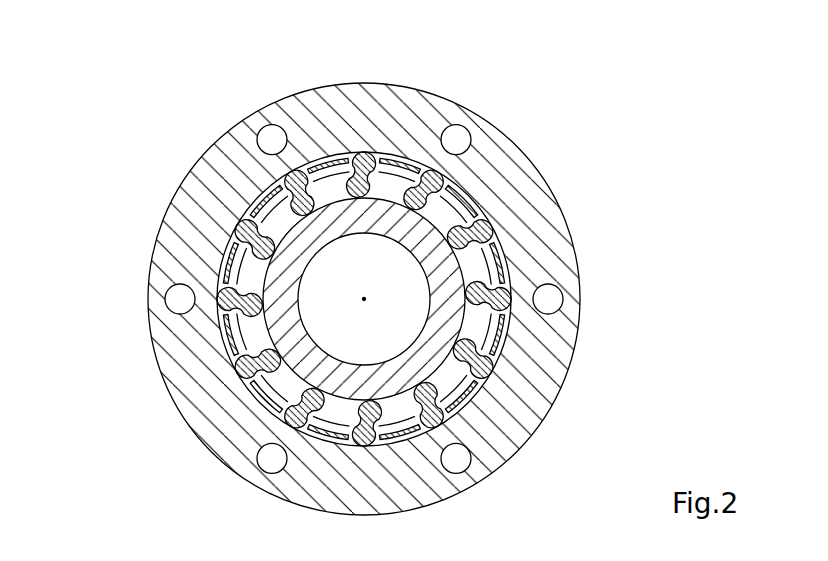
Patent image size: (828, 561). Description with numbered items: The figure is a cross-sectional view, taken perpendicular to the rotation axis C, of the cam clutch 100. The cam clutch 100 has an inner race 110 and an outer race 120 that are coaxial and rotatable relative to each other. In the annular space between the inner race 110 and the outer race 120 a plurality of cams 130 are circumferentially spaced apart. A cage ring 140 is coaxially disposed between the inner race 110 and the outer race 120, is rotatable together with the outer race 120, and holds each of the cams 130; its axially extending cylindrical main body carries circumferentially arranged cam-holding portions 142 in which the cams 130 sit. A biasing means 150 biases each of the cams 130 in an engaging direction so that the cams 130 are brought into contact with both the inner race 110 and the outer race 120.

The cam clutch 100 is at (198, 153).
The inner race 110 is at (268, 325).
The outer race 120 is at (165, 237).
The cams 130 is at (497, 237).
The cage ring 140 is at (497, 342).
The cam-holding portions 142 is at (434, 176).
The biasing means 150 is at (463, 192).